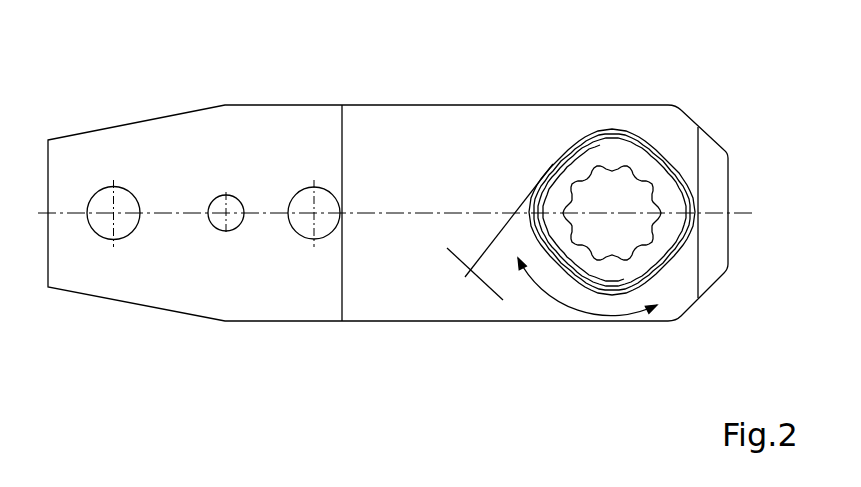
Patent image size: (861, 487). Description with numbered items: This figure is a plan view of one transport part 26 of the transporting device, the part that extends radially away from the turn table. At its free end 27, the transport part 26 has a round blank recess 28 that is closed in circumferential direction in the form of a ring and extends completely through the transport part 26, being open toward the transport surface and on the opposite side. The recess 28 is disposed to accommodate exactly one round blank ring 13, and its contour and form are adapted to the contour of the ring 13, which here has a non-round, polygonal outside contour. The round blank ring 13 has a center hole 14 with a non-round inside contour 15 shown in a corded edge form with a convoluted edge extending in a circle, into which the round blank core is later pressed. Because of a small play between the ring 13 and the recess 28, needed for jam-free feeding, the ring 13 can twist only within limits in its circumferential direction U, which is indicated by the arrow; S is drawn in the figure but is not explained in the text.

The round blank ring 13 is at (605, 157).
The center hole 14 is at (623, 180).
The non-round inside contour 15 is at (582, 237).
The transport part 26 is at (388, 128).
The free end 27 is at (715, 178).
The round blank recess 28 is at (553, 164).
The pivot axis S is at (500, 232).
The circumferential direction U is at (553, 303).